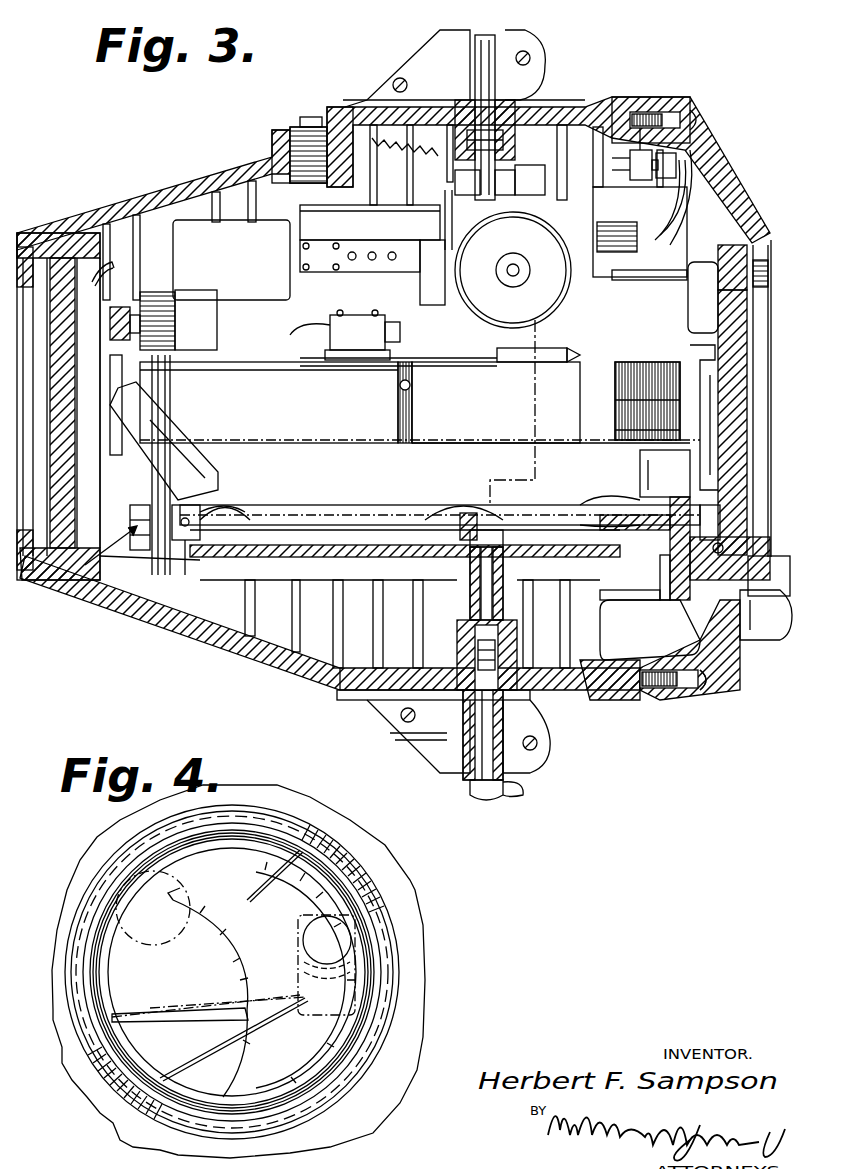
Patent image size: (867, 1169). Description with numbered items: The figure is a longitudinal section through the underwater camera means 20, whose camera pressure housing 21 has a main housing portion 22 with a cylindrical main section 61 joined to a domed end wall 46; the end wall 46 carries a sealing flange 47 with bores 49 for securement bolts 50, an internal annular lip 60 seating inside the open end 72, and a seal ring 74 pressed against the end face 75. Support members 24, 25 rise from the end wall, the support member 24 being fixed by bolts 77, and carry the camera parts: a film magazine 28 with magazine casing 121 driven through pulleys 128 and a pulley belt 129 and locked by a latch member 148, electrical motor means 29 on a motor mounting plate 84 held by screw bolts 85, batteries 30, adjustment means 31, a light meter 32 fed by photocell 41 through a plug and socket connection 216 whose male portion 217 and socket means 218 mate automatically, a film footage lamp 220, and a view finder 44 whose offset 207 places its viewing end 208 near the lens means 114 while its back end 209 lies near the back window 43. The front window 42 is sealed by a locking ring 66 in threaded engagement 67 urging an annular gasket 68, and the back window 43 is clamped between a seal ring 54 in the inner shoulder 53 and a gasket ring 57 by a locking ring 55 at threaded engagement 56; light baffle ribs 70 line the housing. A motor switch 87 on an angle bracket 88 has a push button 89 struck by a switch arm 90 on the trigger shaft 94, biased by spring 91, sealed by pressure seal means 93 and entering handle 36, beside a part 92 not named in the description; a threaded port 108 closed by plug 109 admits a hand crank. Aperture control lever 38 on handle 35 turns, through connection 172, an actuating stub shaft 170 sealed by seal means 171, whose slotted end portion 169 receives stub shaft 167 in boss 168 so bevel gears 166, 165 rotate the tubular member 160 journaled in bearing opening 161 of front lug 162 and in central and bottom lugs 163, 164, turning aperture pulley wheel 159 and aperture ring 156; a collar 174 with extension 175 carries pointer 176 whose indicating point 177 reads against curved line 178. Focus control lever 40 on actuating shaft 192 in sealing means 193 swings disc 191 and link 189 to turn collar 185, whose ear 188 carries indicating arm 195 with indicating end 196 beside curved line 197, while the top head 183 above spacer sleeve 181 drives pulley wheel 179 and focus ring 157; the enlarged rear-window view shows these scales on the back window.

In FIG. 3, the underwater camera means 20 is at (205, 155).
In FIG. 3, the camera pressure housing 21 is at (192, 628).
In FIG. 3, the main housing portion 22 is at (255, 662).
In FIG. 3, the support member 24 is at (620, 290).
In FIG. 3, the support member 25 is at (326, 580).
In FIG. 3, the film magazine 28 is at (545, 455).
In FIG. 3, the electrical motor means 29 is at (505, 310).
In FIG. 3, the batteries 30 is at (700, 212).
In FIG. 3, the adjustment means 31 is at (100, 578).
In FIG. 3, the light meter and index 32 is at (694, 304).
In FIG. 4, the light meter and index 32 is at (358, 956).
In FIG. 3, the handle 35 is at (552, 762).
In FIG. 3, the handle 36 is at (545, 52).
In FIG. 3, the aperture control lever 38 is at (528, 795).
In FIG. 3, the focus control lever 40 is at (770, 565).
In FIG. 3, the photocell 41 is at (90, 280).
In FIG. 3, the front window 42 is at (60, 256).
In FIG. 3, the back window 43 is at (740, 250).
In FIG. 4, the back window 43 is at (322, 880).
In FIG. 3, the view finder 44 is at (322, 465).
In FIG. 3, the circular end wall 46 is at (712, 170).
In FIG. 4, the circular end wall 46 is at (400, 905).
In FIG. 3, the circumferential sealing flange 47 is at (683, 100).
In FIG. 3, the bores 49 is at (668, 116).
In FIG. 3, the securement bolts 50 is at (705, 118).
In FIG. 3, the inner shoulder 53 is at (720, 232).
In FIG. 3, the seal ring 54 is at (712, 542).
In FIG. 4, the locking ring 55 is at (378, 1005).
In FIG. 3, the threaded engagement 56 is at (770, 391).
In FIG. 3, the gasket ring 57 is at (770, 540).
In FIG. 3, the internal annular lip 60 is at (650, 648).
In FIG. 3, the main section 61 is at (345, 110).
In FIG. 3, the locking pressure ring 66 is at (20, 255).
In FIG. 3, the threaded engagement 67 is at (35, 578).
In FIG. 3, the annular gasket 68 is at (35, 252).
In FIG. 3, the light baffle ribs 70 is at (172, 210).
In FIG. 3, the open end 72 is at (628, 662).
In FIG. 3, the seal ring 74 is at (680, 692).
In FIG. 3, the end face 75 is at (665, 690).
In FIG. 3, the bolts 77 is at (672, 330).
In FIG. 3, the motor mounting plate 84 is at (436, 305).
In FIG. 3, the screw bolts 85 is at (370, 272).
In FIG. 3, the motor switch 87 is at (527, 172).
In FIG. 3, the angle bracket 88 is at (436, 216).
In FIG. 3, the switch push button 89 is at (460, 188).
In FIG. 3, the switch arm 90 is at (448, 176).
In FIG. 3, the spring 91 is at (405, 164).
In FIG. 3, the collar 92 is at (498, 190).
In FIG. 3, the pressure seal means 93 is at (500, 138).
In FIG. 3, the trigger shaft 94 is at (478, 78).
In FIG. 3, the threaded port 108 is at (280, 140).
In FIG. 3, the threaded plug 109 is at (310, 125).
In FIG. 3, the lens means 114 is at (150, 300).
In FIG. 3, the magazine casing 121 is at (495, 413).
In FIG. 3, the pulleys 128 is at (548, 348).
In FIG. 3, the pulley belt 129 is at (582, 352).
In FIG. 3, the latch member 148 is at (412, 385).
In FIG. 3, the aperture ring 156 is at (168, 362).
In FIG. 3, the focus ring 157 is at (152, 342).
In FIG. 3, the aperture pulley wheel 159 is at (150, 600).
In FIG. 3, the hollow tubular member 160 is at (330, 510).
In FIG. 3, the bearing opening 161 is at (245, 515).
In FIG. 3, the front lug 162 is at (225, 505).
In FIG. 3, the central ported lug 163 is at (448, 505).
In FIG. 3, the bottom ported lug 164 is at (600, 505).
In FIG. 3, the external bevel gear 165 is at (478, 505).
In FIG. 3, the bevel gear 166 is at (500, 515).
In FIG. 3, the stub shaft 167 is at (500, 570).
In FIG. 3, the boss 168 is at (470, 570).
In FIG. 3, the slotted end portion 169 is at (476, 618).
In FIG. 3, the actuating stub shaft 170 is at (480, 735).
In FIG. 3, the seal means 171 is at (500, 648).
In FIG. 3, the connection 172 is at (470, 792).
In FIG. 3, the collar 174 is at (625, 510).
In FIG. 3, the extension 175 is at (640, 490).
In FIG. 3, the aperture indicating pointer 176 is at (690, 396).
In FIG. 4, the aperture indicating pointer 176 is at (200, 1005).
In FIG. 3, the indicating point 177 is at (695, 350).
In FIG. 4, the indicating point 177 is at (290, 1008).
In FIG. 4, the curved line 178 is at (225, 892).
In FIG. 3, the pulley wheel 179 is at (186, 562).
In FIG. 3, the spacer sleeve 181 is at (182, 503).
In FIG. 3, the top head 183 is at (135, 515).
In FIG. 3, the collar 185 is at (675, 585).
In FIG. 3, the ear 188 is at (660, 545).
In FIG. 3, the link 189 is at (668, 590).
In FIG. 3, the disc 191 is at (680, 612).
In FIG. 3, the actuating shaft 192 is at (762, 622).
In FIG. 3, the sealing means 193 is at (710, 655).
In FIG. 3, the indicating arm 195 is at (690, 410).
In FIG. 4, the indicating arm 195 is at (145, 1015).
In FIG. 3, the indicating end 196 is at (690, 385).
In FIG. 4, the indicating end 196 is at (218, 1030).
In FIG. 4, the curved line 197 is at (228, 960).
In FIG. 3, the offset 207 is at (228, 440).
In FIG. 3, the viewing end 208 is at (115, 420).
In FIG. 3, the back end 209 is at (690, 432).
In FIG. 4, the back end 209 is at (125, 930).
In FIG. 3, the plug and socket connection 216 is at (645, 182).
In FIG. 3, the male portion 217 is at (632, 148).
In FIG. 3, the socket means 218 is at (672, 178).
In FIG. 3, the film footage lamp 220 is at (358, 336).